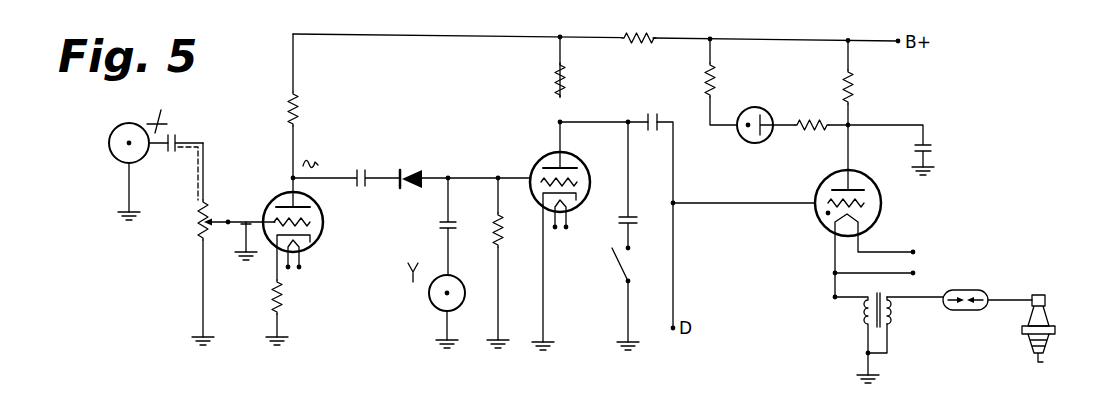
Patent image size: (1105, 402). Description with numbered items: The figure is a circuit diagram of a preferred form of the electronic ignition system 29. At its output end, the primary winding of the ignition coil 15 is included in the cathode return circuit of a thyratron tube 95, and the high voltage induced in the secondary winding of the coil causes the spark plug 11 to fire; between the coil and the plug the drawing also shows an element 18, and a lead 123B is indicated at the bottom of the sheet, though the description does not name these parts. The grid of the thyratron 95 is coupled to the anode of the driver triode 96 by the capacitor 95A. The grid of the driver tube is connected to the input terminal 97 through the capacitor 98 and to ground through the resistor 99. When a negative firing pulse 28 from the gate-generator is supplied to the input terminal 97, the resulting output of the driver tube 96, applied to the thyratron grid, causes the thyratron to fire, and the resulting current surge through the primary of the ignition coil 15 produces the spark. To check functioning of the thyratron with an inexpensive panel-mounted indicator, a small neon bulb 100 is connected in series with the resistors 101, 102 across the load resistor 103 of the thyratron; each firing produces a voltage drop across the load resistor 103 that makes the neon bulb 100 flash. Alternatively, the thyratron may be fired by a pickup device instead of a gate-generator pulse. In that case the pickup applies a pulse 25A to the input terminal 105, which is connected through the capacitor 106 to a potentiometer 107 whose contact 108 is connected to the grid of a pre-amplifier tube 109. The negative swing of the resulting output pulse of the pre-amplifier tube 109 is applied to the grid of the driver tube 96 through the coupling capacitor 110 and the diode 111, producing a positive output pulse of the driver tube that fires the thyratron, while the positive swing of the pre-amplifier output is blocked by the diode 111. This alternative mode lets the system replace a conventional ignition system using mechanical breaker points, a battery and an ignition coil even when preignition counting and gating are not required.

The input terminal 105 is at (111, 148).
The capacitor 106 is at (177, 137).
The pulse 25A is at (161, 115).
The potentiometer 107 is at (200, 223).
The contact 108 is at (222, 224).
The pre-amplifier tube 109 is at (270, 196).
The coupling capacitor 110 is at (346, 193).
The diode 111 is at (417, 170).
The electronic ignition system 29 is at (442, 112).
The driver triode 96 is at (532, 170).
The capacitor 98 is at (432, 230).
The resistor 99 is at (484, 263).
The negative firing pulse 28 is at (410, 277).
The input terminal 97 is at (467, 303).
The capacitor 95A is at (657, 101).
The resistor 101 is at (716, 93).
The neon bulb 100 is at (762, 143).
The resistor 102 is at (810, 117).
The load resistor 103 is at (855, 93).
The thyratron tube 95 is at (883, 213).
The ignition coil 15 is at (878, 283).
The spark gap 18 is at (965, 311).
The spark plug 11 is at (1040, 313).
The lead 123B is at (412, 401).